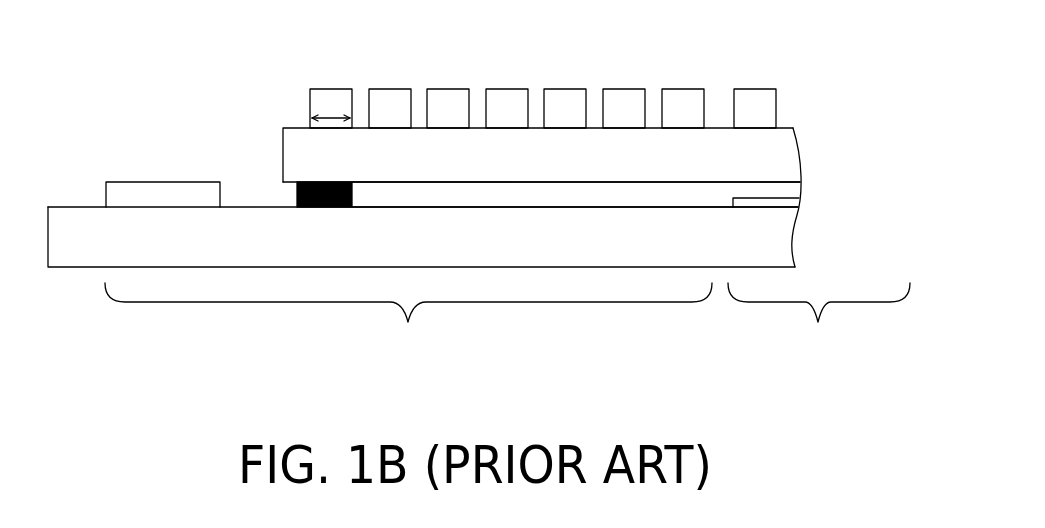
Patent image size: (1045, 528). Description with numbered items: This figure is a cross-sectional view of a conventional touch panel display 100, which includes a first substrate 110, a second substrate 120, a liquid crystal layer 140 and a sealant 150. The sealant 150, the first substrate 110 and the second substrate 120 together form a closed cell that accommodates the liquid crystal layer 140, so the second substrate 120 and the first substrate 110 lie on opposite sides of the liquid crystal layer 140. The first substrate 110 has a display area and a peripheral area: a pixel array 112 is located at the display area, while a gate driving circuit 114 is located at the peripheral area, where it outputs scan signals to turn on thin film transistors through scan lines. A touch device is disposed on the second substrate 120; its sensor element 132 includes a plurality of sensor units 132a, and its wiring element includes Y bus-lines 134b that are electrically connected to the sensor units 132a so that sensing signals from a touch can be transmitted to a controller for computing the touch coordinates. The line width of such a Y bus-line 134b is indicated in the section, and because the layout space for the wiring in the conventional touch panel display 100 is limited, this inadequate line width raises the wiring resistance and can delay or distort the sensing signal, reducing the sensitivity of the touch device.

The conventional touch panel display 100 is at (479, 219).
The first substrate 110 is at (782, 242).
The pixel array 112 is at (787, 203).
The gate driving circuit 114 is at (145, 190).
The second substrate 120 is at (780, 160).
The sensor element 132 is at (536, 70).
The sensor unit 132a is at (728, 83).
The Y bus-line 134b is at (312, 101).
The liquid crystal layer 140 is at (787, 191).
The sealant 150 is at (317, 207).